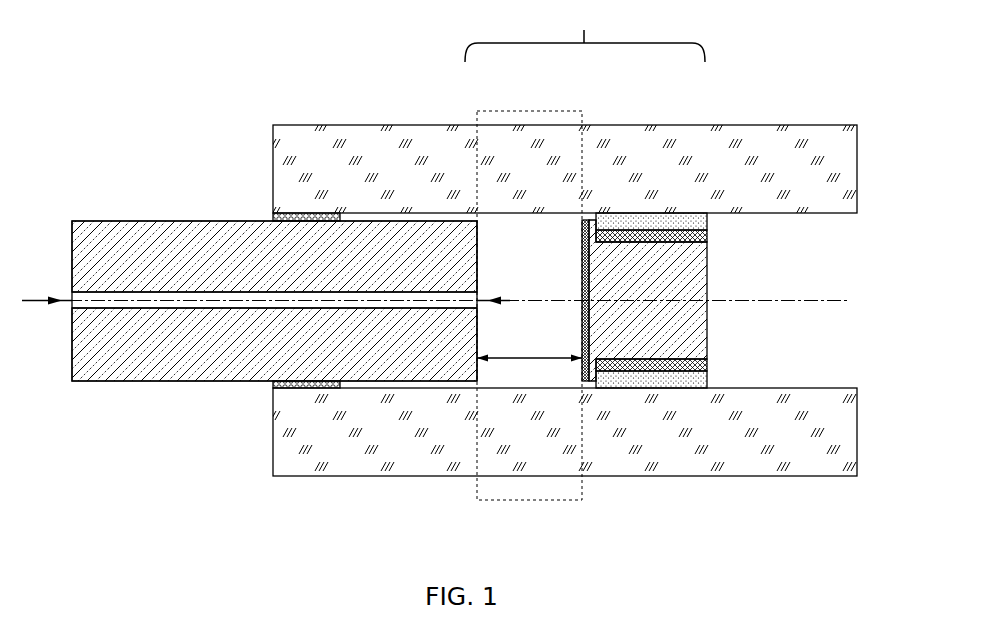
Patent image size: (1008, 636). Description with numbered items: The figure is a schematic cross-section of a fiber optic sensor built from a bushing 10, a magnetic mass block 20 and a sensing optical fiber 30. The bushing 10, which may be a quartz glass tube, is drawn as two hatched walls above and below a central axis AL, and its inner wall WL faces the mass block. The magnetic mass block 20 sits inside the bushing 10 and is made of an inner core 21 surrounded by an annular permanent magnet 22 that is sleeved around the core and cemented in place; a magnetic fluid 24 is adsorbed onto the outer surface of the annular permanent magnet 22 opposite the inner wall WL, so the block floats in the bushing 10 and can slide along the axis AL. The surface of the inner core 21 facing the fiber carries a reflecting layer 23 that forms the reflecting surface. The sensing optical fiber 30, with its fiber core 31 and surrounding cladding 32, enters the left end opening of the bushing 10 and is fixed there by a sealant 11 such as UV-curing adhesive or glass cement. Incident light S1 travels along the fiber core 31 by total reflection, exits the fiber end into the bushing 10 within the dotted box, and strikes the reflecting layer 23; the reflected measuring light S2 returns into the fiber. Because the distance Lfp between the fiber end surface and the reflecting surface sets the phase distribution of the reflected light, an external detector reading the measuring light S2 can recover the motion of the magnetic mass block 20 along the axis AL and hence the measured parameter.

The bushing 10 is at (398, 165).
The sealant 11 is at (305, 215).
The magnetic mass block 20 is at (586, 196).
The inner core 21 is at (685, 288).
The annular permanent magnet 22 is at (662, 218).
The reflecting layer 23 is at (580, 237).
The magnetic fluid 24 is at (612, 232).
The sensing optical fiber 30 is at (75, 61).
The fiber core 31 is at (190, 300).
The cladding 32 is at (146, 260).
The incident light S1 is at (47, 288).
The measuring light S2 is at (506, 288).
The distance Lfp is at (529, 346).
The inner wall WL is at (816, 213).
The axis AL is at (816, 301).